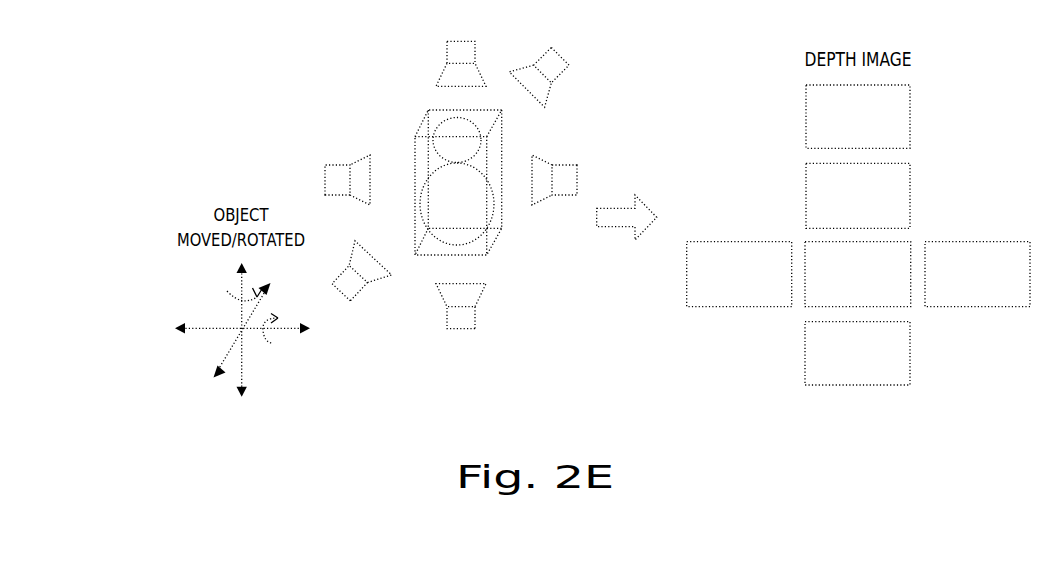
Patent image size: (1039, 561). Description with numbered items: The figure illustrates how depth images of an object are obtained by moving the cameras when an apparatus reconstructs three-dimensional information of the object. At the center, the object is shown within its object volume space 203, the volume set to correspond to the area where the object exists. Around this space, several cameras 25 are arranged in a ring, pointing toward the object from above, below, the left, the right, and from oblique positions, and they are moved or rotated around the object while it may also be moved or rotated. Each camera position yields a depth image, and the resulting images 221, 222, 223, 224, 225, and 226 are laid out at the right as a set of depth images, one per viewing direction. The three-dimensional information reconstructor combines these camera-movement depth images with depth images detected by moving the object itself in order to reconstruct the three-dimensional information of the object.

The object volume space 203 is at (424, 118).
The cameras 25 is at (364, 294).
The image 221 is at (858, 116).
The image 222 is at (858, 195).
The image 223 is at (858, 274).
The image 224 is at (857, 353).
The image 225 is at (739, 274).
The image 226 is at (977, 274).